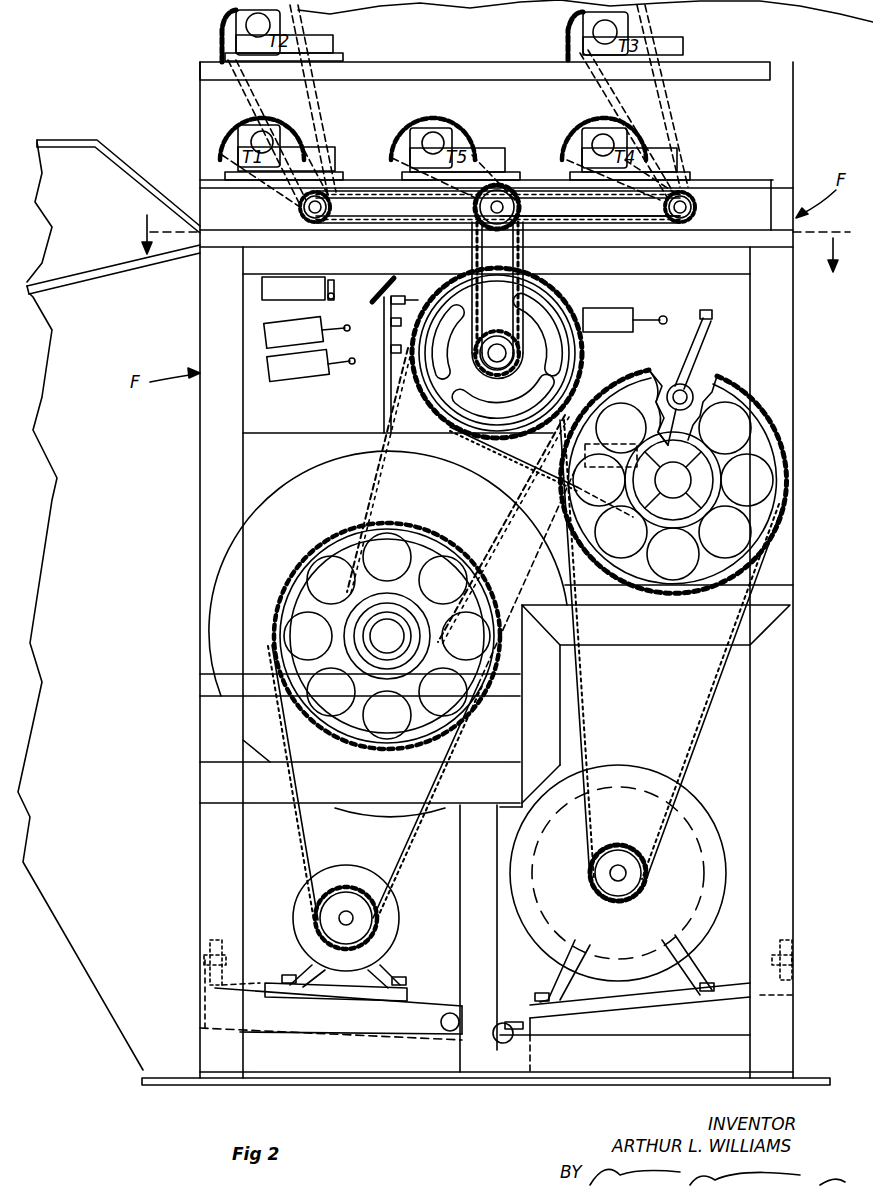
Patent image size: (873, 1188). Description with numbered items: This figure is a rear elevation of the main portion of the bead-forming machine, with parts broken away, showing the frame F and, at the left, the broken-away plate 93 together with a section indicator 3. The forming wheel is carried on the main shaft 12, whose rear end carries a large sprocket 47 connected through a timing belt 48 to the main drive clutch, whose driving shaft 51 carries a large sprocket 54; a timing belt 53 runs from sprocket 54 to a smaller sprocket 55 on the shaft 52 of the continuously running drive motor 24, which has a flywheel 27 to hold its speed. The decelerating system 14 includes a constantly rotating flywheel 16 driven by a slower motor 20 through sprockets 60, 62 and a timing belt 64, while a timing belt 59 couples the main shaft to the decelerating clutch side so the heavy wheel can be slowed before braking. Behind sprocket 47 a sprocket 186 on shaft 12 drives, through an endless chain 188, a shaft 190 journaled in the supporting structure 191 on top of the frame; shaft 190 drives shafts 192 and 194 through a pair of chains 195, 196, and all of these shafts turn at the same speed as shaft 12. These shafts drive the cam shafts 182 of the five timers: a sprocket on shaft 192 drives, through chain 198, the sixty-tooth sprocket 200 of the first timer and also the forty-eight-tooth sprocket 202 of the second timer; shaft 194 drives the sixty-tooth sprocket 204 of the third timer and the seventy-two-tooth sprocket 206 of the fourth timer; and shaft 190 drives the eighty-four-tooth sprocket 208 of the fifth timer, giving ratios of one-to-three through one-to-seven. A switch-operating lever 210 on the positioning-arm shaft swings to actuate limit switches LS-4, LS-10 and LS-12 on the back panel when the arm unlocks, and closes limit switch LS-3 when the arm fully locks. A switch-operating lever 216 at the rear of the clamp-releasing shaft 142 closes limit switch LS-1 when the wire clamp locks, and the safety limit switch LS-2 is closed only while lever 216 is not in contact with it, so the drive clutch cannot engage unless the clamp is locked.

The decelerating system 14 is at (178, 758).
The feed plate 93 is at (68, 140).
The section line 3 is at (489, 243).
The 48-tooth sprocket 202 is at (236, 33).
The 60-tooth sprocket 204 is at (583, 25).
The endless chain 198 is at (300, 140).
The 60-tooth sprocket 200 is at (245, 118).
The 84-tooth sprocket 208 is at (452, 108).
The 72-tooth sprocket 206 is at (590, 115).
The cam shaft 182 is at (270, 25).
The chain 195 is at (405, 225).
The chain 196 is at (630, 225).
The shaft 192 is at (328, 208).
The shaft 190 is at (520, 208).
The shaft 194 is at (696, 208).
The supporting structure 191 is at (262, 238).
The endless chain 188 is at (522, 256).
The switch-operating lever 210 is at (382, 380).
The main shaft 12 is at (497, 353).
The sprocket 186 is at (486, 368).
The timing belt 59 is at (372, 440).
The large sprocket 47 is at (440, 398).
The timing belt 48 is at (508, 455).
The large sprocket 54 is at (692, 481).
The driving shaft 51 is at (680, 485).
The horizontal shaft 142 is at (674, 372).
The switch-operating lever 216 is at (695, 366).
The flywheel 16 is at (212, 640).
The sprocket 60 is at (300, 568).
The timing belt 53 is at (722, 692).
The flywheel 27 is at (640, 768).
The drive motor 24 is at (713, 822).
The smaller sprocket 55 is at (618, 850).
The shaft 52 is at (628, 874).
The motor 20 is at (392, 930).
The sprocket 62 is at (335, 925).
The timing belt 64 is at (308, 840).
The limit switch LS-1 is at (620, 421).
The limit switch LS-2 is at (640, 312).
The limit switch LS-3 is at (415, 300).
The limit switch LS-4 is at (311, 365).
The limit switch LS-10 is at (307, 333).
The limit switch LS-12 is at (298, 288).